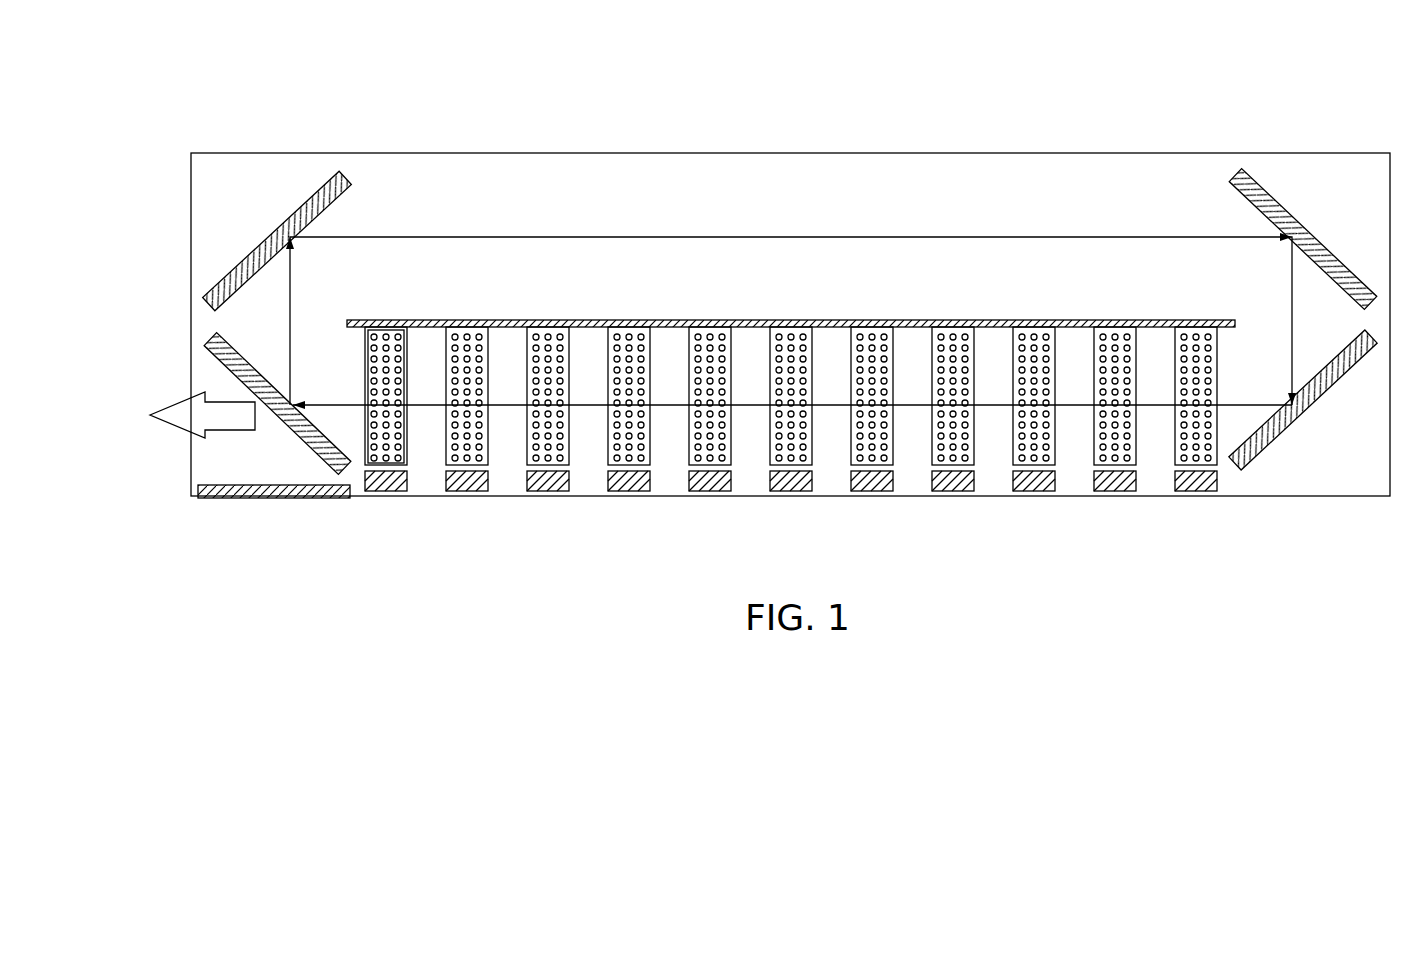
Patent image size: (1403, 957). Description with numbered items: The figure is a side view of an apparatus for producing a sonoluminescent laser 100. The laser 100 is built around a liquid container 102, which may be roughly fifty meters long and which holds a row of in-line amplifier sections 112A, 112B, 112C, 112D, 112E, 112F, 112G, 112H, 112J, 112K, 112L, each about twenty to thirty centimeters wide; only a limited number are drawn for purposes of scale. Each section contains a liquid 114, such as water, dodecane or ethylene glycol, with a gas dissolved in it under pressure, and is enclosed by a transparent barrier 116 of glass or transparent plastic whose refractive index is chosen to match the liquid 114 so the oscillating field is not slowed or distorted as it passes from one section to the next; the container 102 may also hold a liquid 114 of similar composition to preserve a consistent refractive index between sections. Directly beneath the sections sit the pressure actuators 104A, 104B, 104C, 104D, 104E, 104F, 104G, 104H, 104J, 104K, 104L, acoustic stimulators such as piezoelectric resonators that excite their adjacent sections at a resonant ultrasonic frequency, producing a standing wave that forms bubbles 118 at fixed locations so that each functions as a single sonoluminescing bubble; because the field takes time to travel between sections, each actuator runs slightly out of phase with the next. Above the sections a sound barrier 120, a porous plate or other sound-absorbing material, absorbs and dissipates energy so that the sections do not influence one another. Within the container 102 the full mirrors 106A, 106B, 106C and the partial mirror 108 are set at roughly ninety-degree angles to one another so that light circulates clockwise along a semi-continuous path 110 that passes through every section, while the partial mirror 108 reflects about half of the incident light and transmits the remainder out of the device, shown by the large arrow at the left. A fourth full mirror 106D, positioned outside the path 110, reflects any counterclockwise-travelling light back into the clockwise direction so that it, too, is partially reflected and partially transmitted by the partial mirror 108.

The laser 100 is at (412, 88).
The liquid container 102 is at (793, 152).
The pressure actuator 104A is at (381, 487).
The pressure actuator 104B is at (462, 487).
The pressure actuator 104C is at (543, 487).
The pressure actuator 104D is at (624, 487).
The pressure actuator 104E is at (705, 487).
The pressure actuator 104F is at (786, 487).
The pressure actuator 104G is at (867, 487).
The pressure actuator 104H is at (948, 487).
The pressure actuator 104J is at (1029, 487).
The pressure actuator 104K is at (1110, 487).
The pressure actuator 104L is at (1191, 487).
The reflective surface 106A is at (300, 216).
The reflective surface 106B is at (1282, 212).
The reflective surface 106C is at (1278, 432).
The fourth full mirror 106D is at (276, 499).
The partial mirror 108 is at (302, 442).
The semi-continuous path 110 is at (758, 237).
The amplifier section 112A is at (383, 335).
The amplifier section 112B is at (464, 335).
The amplifier section 112C is at (545, 335).
The amplifier section 112D is at (626, 335).
The amplifier section 112E is at (707, 335).
The amplifier section 112F is at (788, 335).
The amplifier section 112G is at (869, 335).
The amplifier section 112H is at (950, 335).
The amplifier section 112J is at (1031, 335).
The amplifier section 112K is at (1112, 335).
The amplifier section 112L is at (1193, 335).
The liquid 114 is at (459, 193).
The transparent barrier 116 is at (364, 403).
The bubbles 118 is at (373, 458).
The sound barrier 120 is at (1163, 322).